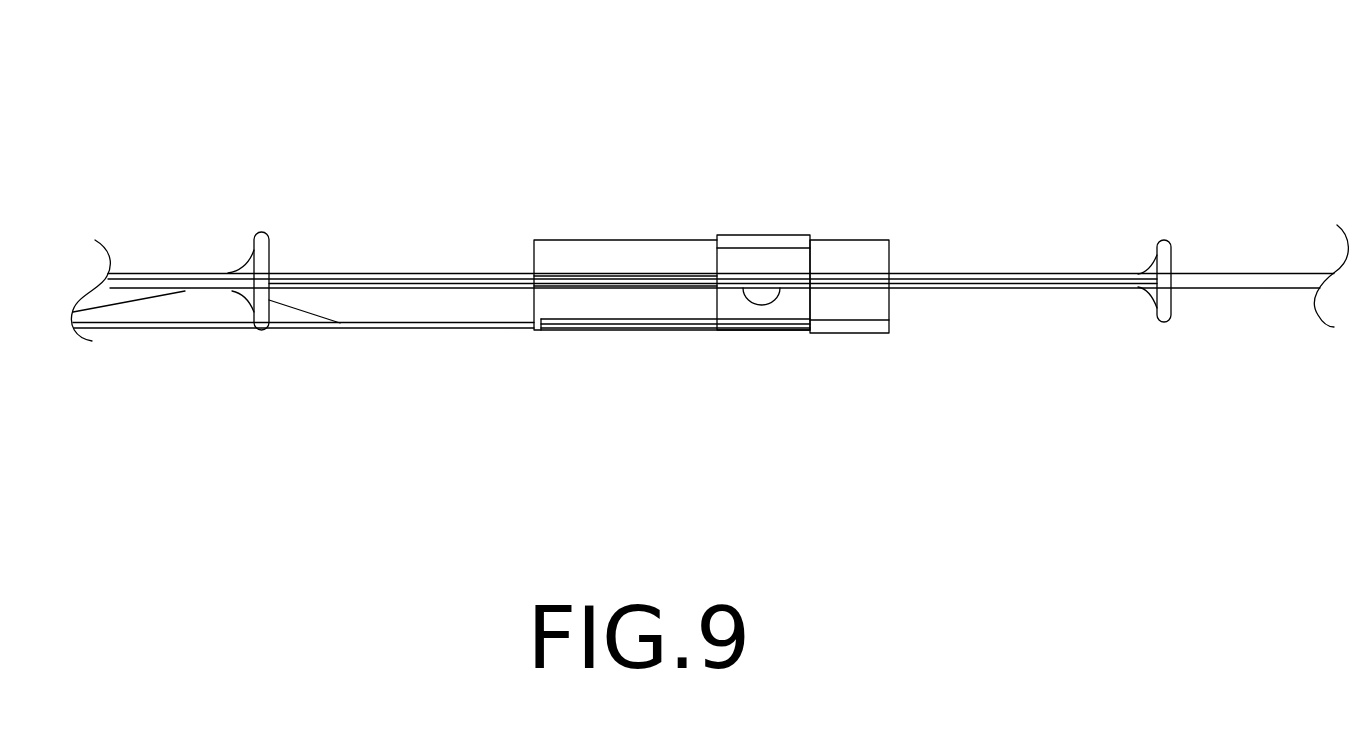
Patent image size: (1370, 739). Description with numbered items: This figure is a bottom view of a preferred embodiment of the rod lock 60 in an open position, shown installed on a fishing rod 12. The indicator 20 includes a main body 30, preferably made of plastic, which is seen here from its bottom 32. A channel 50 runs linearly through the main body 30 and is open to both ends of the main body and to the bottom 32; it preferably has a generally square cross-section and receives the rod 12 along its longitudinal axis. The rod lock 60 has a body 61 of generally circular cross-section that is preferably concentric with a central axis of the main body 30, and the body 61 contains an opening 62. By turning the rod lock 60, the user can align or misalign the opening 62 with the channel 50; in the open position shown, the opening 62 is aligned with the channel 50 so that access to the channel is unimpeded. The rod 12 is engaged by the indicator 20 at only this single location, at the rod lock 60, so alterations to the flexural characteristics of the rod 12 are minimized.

The rod 12 is at (425, 274).
The indicator 20 is at (881, 237).
The main body 30 is at (563, 240).
The bottom 32 is at (634, 258).
The channel 50 is at (598, 290).
The rod lock 60 is at (760, 248).
The body 61 is at (728, 258).
The opening 62 is at (780, 288).